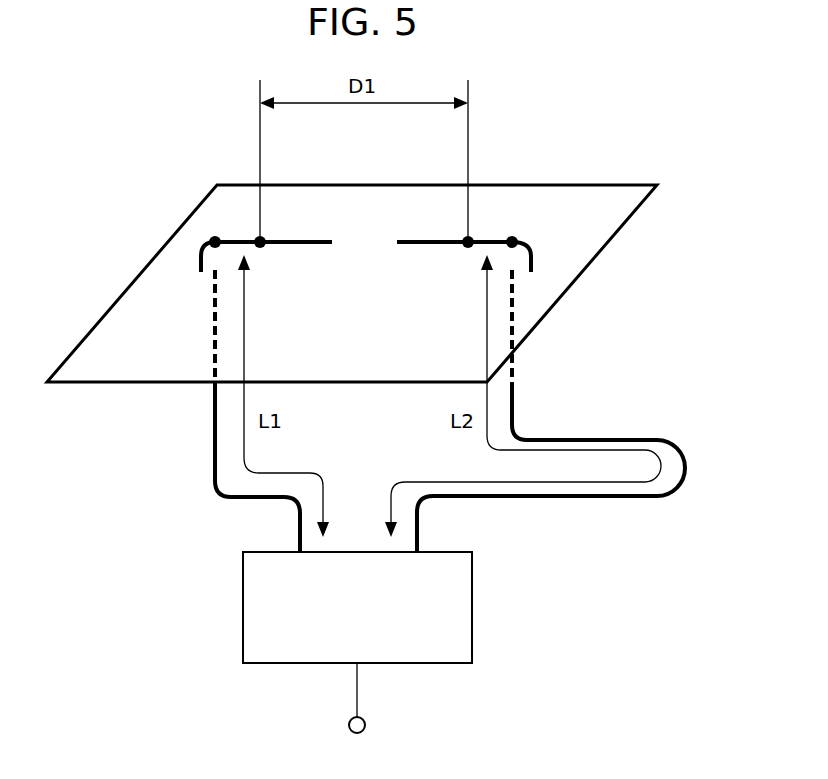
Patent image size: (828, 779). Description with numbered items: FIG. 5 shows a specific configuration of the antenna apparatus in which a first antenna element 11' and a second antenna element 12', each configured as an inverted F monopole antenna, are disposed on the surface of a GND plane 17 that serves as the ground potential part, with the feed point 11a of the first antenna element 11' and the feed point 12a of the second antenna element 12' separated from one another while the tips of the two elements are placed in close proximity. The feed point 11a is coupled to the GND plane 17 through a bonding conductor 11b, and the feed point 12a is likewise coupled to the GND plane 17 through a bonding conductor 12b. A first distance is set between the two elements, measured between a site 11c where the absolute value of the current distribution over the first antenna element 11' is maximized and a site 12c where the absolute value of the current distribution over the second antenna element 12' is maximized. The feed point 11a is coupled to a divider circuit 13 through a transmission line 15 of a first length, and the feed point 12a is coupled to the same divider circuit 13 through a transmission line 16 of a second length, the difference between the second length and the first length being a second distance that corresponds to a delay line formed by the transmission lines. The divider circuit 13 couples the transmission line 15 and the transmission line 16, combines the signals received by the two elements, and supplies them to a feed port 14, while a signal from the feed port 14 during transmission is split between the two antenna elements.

The first antenna element 11' is at (273, 190).
The feed point of the first antenna element 11a is at (215, 242).
The bonding conductor 11b is at (201, 258).
The site of maximum current distribution of the first antenna element 11c is at (262, 246).
The second antenna element 12' is at (454, 190).
The feed point of the second antenna element 12a is at (512, 242).
The bonding conductor 12b is at (531, 255).
The site of maximum current distribution of the second antenna element 12c is at (466, 246).
The divider circuit 13 is at (473, 607).
The feed port 14 is at (366, 725).
The transmission line 15 is at (213, 419).
The transmission line 16 is at (514, 397).
The GND plane 17 is at (540, 292).